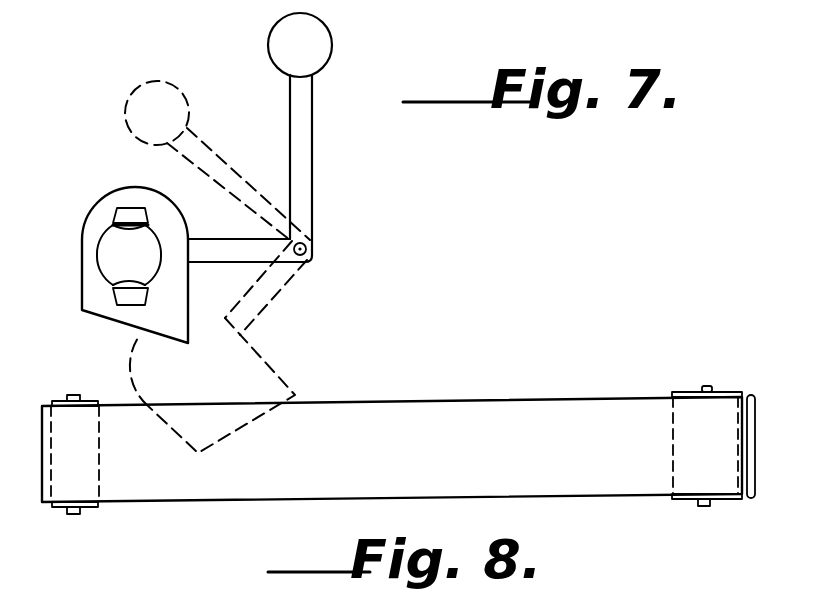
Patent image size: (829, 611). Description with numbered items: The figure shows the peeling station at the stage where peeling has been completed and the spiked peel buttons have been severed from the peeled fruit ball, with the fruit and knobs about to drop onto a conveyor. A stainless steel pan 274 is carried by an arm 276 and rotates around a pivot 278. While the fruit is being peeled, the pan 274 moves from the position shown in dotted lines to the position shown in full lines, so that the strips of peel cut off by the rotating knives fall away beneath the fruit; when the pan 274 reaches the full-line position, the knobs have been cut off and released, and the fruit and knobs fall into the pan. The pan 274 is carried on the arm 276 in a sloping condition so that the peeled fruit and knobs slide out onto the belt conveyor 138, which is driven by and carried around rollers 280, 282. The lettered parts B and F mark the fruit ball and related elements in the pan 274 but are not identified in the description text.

In FIG. 7, the bracket B is at (128, 217).
In FIG. 7, the lamp fixture F is at (95, 260).
In FIG. 7, the stainless steel pan 274 is at (182, 297).
In FIG. 7, the arm 276 is at (224, 233).
In FIG. 7, the pivot 278 is at (307, 258).
In FIG. 8, the belt conveyor 138 is at (468, 382).
In FIG. 8, the roller 280 is at (92, 508).
In FIG. 8, the roller 282 is at (680, 500).